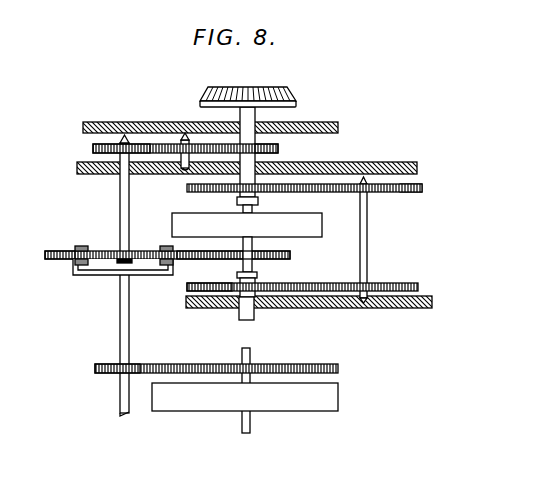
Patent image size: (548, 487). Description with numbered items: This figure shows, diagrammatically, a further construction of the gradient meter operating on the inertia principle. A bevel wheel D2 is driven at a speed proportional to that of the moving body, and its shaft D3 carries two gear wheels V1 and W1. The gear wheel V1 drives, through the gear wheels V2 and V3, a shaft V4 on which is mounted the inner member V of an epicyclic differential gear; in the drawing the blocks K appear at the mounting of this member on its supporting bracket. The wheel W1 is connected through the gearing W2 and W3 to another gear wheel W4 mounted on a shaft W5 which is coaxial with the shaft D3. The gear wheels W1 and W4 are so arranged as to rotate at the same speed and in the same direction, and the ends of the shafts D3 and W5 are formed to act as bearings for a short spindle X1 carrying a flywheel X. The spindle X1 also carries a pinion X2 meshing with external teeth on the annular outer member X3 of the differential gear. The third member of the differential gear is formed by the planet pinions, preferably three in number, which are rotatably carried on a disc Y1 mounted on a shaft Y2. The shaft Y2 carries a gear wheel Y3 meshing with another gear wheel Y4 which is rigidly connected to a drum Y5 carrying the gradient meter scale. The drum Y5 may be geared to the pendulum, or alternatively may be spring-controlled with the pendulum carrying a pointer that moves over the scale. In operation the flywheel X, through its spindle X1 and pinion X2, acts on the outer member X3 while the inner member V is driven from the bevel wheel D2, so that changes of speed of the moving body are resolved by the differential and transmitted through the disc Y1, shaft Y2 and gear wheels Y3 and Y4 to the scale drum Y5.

The bevel wheel D2 is at (285, 89).
The shaft D3 is at (250, 157).
The gear wheel V1 is at (263, 150).
The gear wheel V2 is at (172, 147).
The gear wheel V3 is at (100, 147).
The shaft V4 is at (120, 196).
The inner member of epicyclic differential gear V is at (103, 250).
The clamp block K is at (78, 247).
The gear wheel W1 is at (187, 186).
The gearing W2 is at (413, 193).
The gearing W3 is at (402, 285).
The gear wheel W4 is at (188, 287).
The shaft W5 is at (250, 312).
The flywheel X is at (320, 230).
The spindle X1 is at (252, 211).
The pinion X2 is at (292, 257).
The annular outer member of differential gear X3 is at (45, 256).
The disc Y1 is at (97, 275).
The shaft Y2 is at (120, 306).
The gear wheel Y3 is at (100, 364).
The gear wheel Y4 is at (307, 365).
The drum Y5 is at (333, 402).